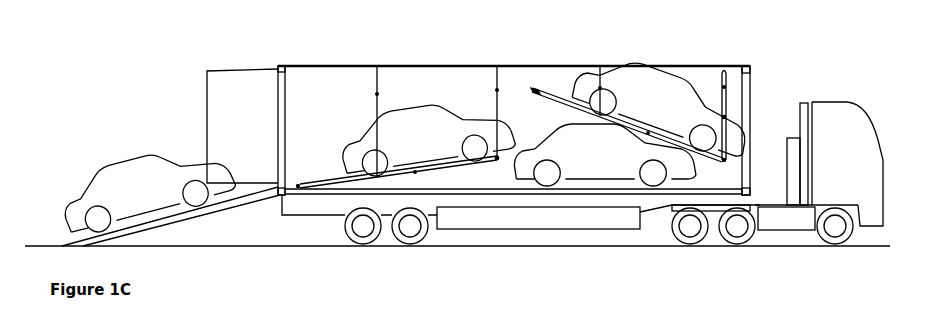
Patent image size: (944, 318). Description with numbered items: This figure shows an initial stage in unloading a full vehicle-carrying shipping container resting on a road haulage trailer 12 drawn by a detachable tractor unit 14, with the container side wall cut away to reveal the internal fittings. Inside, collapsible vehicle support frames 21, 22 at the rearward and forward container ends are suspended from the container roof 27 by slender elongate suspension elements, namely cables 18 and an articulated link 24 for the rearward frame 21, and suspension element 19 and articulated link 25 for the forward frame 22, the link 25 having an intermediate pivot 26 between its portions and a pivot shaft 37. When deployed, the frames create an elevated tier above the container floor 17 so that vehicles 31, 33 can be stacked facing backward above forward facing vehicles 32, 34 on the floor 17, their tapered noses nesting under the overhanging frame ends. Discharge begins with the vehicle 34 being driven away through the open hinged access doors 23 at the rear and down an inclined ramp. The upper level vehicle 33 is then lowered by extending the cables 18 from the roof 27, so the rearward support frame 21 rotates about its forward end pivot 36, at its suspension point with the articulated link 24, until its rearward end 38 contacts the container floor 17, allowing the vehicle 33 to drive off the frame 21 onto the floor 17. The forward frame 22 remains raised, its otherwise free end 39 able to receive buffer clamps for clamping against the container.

The road haulage trailer 12 is at (323, 203).
The detachable tractor unit 14 is at (839, 181).
The container floor 17 is at (458, 188).
The cables 18 is at (377, 94).
The suspension element 19 is at (600, 88).
The rearward vehicle support frame 21 is at (415, 172).
The forward vehicle support frame 22 is at (648, 133).
The hinged access doors 23 is at (234, 121).
The articulated link 24 is at (497, 90).
The articulated link 25 is at (724, 72).
The intermediate pivot 26 is at (727, 117).
The container roof 27 is at (547, 66).
The vehicle 31 is at (659, 116).
The vehicle 32 is at (586, 151).
The vehicle 33 is at (423, 138).
The vehicle 34 is at (130, 194).
The forward end pivot 36 is at (500, 159).
The pivot shaft 37 is at (724, 160).
The rearward end 38 is at (282, 197).
The free end 39 is at (538, 89).